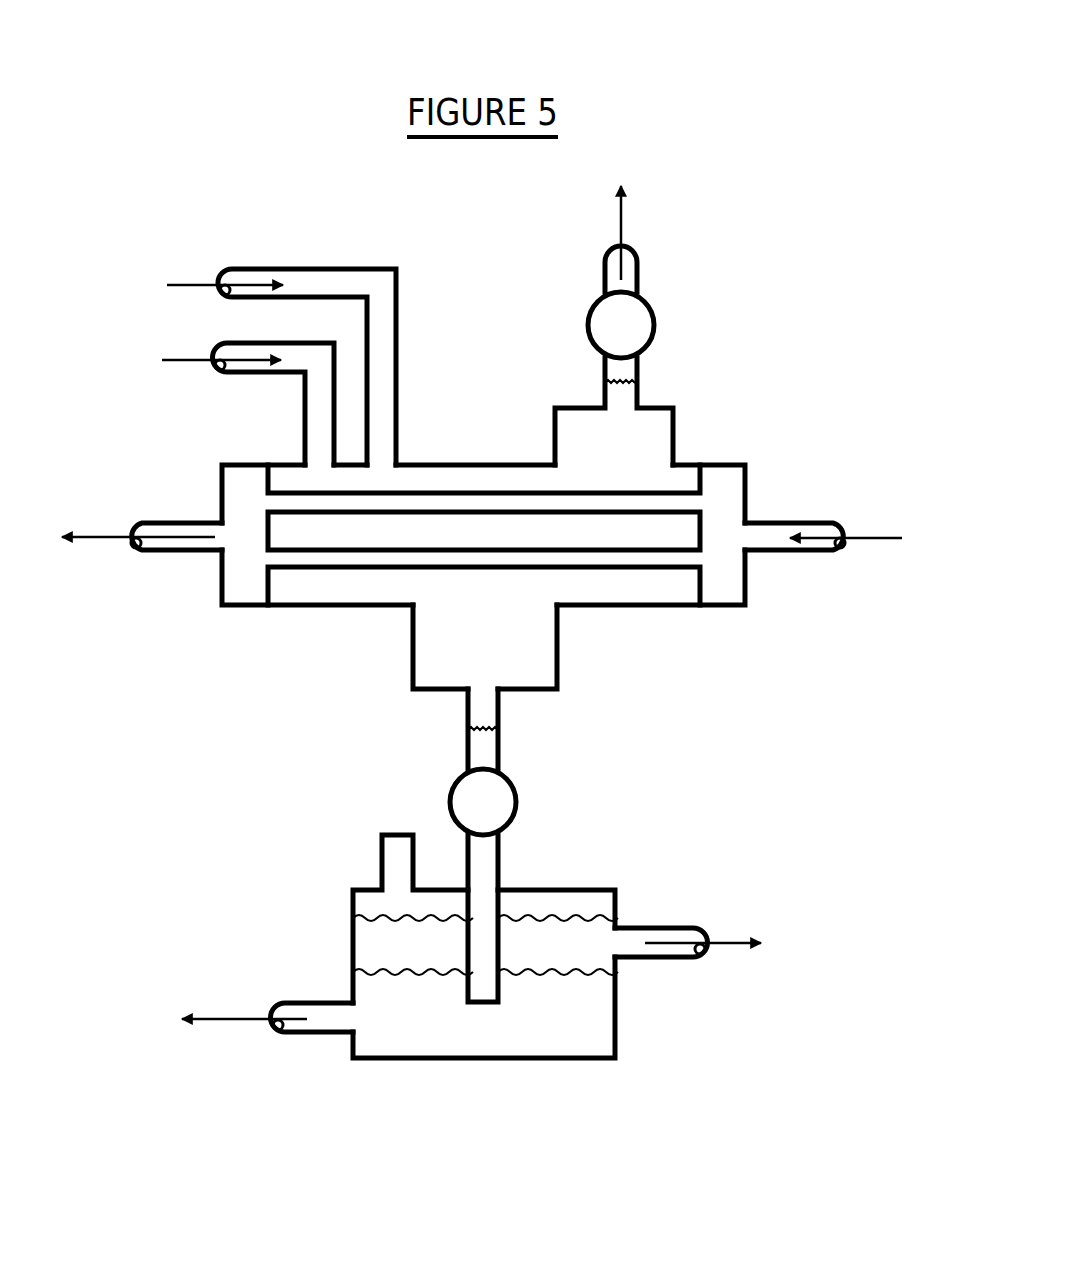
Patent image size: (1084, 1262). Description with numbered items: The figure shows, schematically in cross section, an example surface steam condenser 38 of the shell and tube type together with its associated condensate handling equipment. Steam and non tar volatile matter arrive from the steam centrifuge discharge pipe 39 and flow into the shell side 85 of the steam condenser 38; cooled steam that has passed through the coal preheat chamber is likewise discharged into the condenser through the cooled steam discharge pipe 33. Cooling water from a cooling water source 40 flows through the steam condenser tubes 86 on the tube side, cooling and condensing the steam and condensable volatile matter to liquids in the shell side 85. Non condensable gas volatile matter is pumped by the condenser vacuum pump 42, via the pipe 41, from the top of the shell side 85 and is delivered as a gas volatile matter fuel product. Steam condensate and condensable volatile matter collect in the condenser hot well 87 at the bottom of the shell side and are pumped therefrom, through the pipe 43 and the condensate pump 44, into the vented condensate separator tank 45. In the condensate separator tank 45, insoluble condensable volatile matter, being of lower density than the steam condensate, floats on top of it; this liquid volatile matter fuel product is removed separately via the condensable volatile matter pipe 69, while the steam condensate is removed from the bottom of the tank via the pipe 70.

The cooled steam discharge pipe 33 is at (298, 272).
The steam centrifuge discharge pipe 39 is at (247, 348).
The cooling water source 40 is at (178, 527).
The steam condenser separator 38 is at (700, 465).
The pipe 41 is at (618, 398).
The condenser vacuum pump 42 is at (645, 323).
The pipe 43 is at (480, 747).
The condensate pump 44 is at (500, 807).
The condensate separator tank 45 is at (577, 888).
The condensable volatile matter pipe 69 is at (658, 945).
The pipe 70 is at (327, 1020).
The shell side 85 is at (310, 583).
The steam condenser tubes 86 is at (395, 558).
The condenser hot well 87 is at (515, 665).